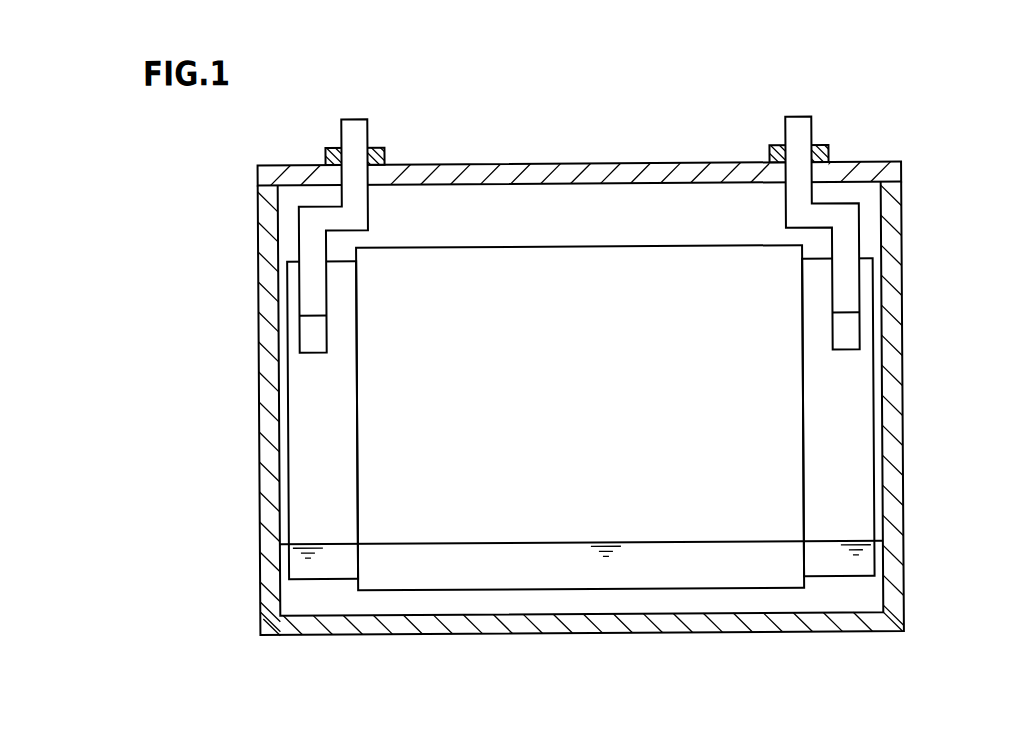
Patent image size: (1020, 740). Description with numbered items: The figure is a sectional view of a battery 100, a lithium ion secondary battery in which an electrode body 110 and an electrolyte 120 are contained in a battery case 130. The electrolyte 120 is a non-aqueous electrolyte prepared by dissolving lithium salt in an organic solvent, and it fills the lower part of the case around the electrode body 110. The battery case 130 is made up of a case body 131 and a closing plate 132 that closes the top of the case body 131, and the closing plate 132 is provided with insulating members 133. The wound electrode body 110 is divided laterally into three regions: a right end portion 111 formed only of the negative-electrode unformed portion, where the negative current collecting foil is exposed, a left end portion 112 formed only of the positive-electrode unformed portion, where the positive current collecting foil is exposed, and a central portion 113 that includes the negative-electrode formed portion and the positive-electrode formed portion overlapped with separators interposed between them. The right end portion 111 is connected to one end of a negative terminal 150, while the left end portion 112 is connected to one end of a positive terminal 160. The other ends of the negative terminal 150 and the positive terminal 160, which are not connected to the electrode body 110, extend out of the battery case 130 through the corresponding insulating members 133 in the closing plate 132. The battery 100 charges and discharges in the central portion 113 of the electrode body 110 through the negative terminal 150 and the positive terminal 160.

The battery 100 is at (606, 378).
The electrode body 110 is at (582, 476).
The right end portion 111 is at (838, 464).
The left end portion 112 is at (345, 487).
The central portion 113 is at (682, 492).
The electrolyte 120 is at (870, 592).
The battery case 130 is at (605, 370).
The case body 131 is at (893, 197).
The closing plate 132 is at (270, 175).
The insulating member 133 is at (384, 148).
The negative terminal 150 is at (800, 118).
The positive terminal 160 is at (362, 120).